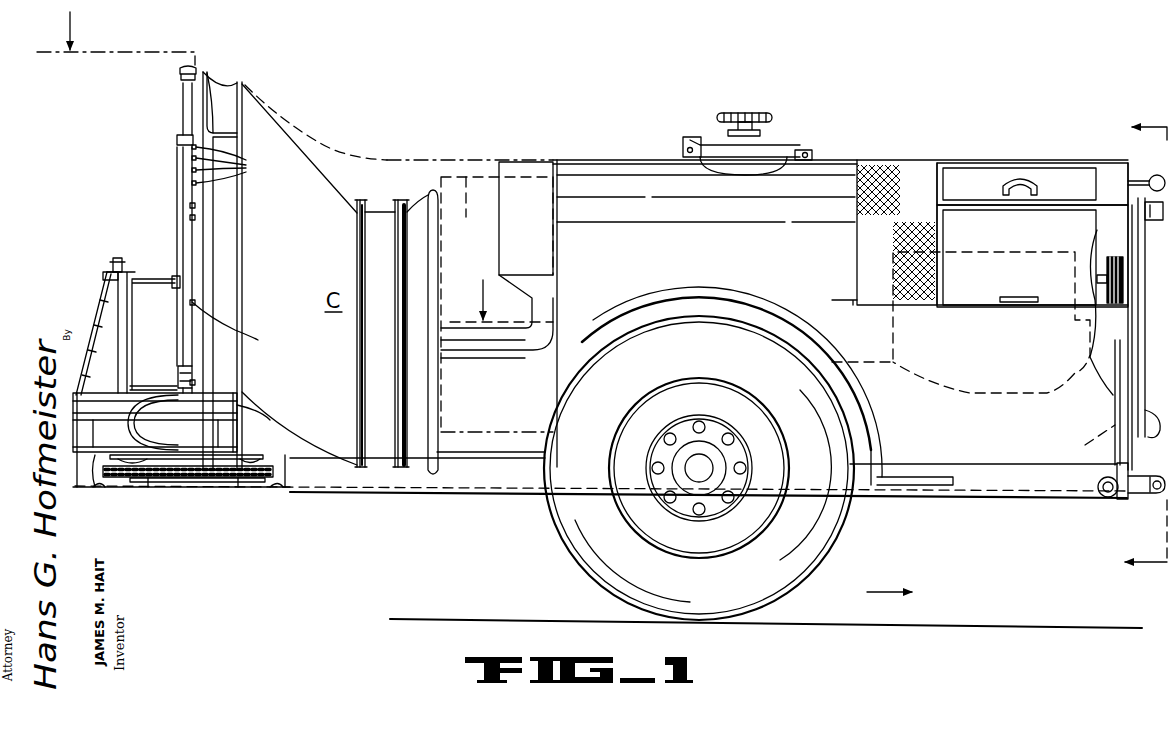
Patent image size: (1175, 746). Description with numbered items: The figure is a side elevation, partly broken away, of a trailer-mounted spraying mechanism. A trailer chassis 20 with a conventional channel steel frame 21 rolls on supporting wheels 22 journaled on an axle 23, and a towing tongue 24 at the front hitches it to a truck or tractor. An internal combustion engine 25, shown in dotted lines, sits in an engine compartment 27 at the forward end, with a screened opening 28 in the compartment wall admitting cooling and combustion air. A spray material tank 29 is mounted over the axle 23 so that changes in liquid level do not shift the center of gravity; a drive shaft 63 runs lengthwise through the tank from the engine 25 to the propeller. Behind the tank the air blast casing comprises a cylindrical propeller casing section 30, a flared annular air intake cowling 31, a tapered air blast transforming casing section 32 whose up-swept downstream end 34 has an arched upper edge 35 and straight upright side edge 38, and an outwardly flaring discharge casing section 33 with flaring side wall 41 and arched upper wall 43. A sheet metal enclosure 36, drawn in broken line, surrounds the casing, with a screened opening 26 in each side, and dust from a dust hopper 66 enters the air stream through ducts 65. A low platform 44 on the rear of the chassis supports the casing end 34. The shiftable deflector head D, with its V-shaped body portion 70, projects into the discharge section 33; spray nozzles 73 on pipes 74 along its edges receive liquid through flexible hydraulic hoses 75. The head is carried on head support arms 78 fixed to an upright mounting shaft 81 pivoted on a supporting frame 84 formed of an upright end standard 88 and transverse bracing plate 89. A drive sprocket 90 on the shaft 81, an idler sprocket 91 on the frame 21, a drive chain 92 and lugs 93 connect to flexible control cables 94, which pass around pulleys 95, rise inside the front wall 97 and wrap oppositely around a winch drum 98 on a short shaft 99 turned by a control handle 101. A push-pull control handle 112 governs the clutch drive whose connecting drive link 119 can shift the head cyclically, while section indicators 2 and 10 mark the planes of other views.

The section line 2- 2 is at (295, 167).
The section line 10- 10 is at (1146, 324).
The trailer chassis 20 is at (478, 494).
The channel steel frame 21 is at (365, 476).
The supporting wheels 22 is at (717, 468).
The axle 23 is at (703, 468).
The towing tongue 24 is at (1150, 496).
The internal combustion engine 25 is at (968, 345).
The screened opening 26 is at (497, 304).
The engine compartment 27 is at (1068, 182).
The screened opening 28 is at (895, 178).
The spray material tank 29 is at (628, 186).
The cylindrical propeller casing section 30 is at (375, 214).
The flared annular air intake cowling 31 is at (410, 212).
The tapered air blast transforming casing section 32 is at (280, 253).
The outwardly flaring discharge casing section 33 is at (258, 340).
The downstream end of tapered casing section 34 is at (247, 400).
The arched upper edge 35 is at (245, 85).
The sheet metal enclosure 36 is at (369, 157).
The upright side edge 38 is at (244, 262).
The outwardly flaring side wall 41 is at (222, 292).
The arched upwardly flaring upper wall 43 is at (219, 100).
The low platform 44 is at (243, 418).
The drive shaft 63 is at (542, 332).
The ducts 65 is at (479, 358).
The dust hopper 66 is at (553, 260).
The body portion 70 is at (190, 206).
The spray nozzles 73 is at (195, 382).
The pipes 74 is at (181, 113).
The flexible hydraulic hoses 75 is at (137, 433).
The head support arms 78 is at (172, 280).
The upright mounting shaft 81 is at (129, 347).
The supporting frame 84 is at (108, 300).
The upright end standard 88 is at (92, 312).
The transverse bracing plate 89 is at (108, 290).
The head adjusting drive sprocket 90 is at (604, 487).
The idler sprocket 91 is at (252, 484).
The drive chain 92 is at (155, 482).
The lugs 93 is at (180, 482).
The flexible control cables 94 is at (232, 488).
The pulleys 95 is at (1100, 496).
The front wall of engine compartment 97 is at (1130, 345).
The winch drum 98 is at (1097, 258).
The short shaft 99 is at (1097, 275).
The control handle 101 is at (1145, 216).
The push-pull control handle 112 is at (1158, 175).
The connecting drive link 119 is at (1145, 437).
The shiftable deflector head D is at (183, 182).